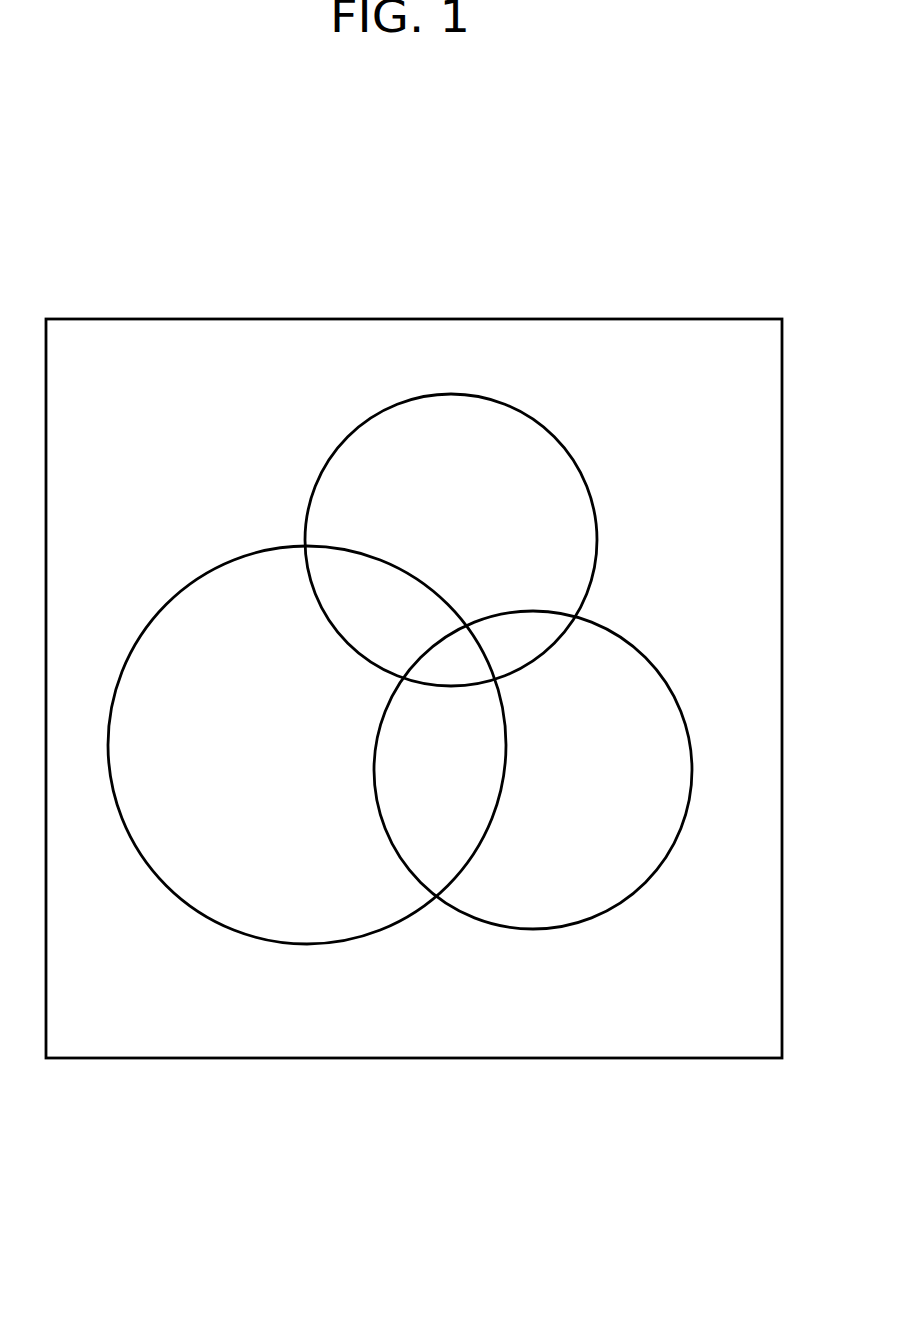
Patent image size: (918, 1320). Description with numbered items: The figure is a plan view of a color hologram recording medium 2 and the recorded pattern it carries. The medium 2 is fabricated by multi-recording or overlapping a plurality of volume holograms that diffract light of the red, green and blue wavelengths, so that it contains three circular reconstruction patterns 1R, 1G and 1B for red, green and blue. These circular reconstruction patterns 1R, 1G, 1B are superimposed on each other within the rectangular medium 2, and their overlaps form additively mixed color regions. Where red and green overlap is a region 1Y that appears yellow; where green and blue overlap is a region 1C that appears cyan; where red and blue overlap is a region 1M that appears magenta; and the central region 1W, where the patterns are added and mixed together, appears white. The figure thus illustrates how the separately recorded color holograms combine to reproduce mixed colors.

The color hologram recording medium 2 is at (458, 1060).
The circular reconstruction pattern of R 1R is at (588, 492).
The circular reconstruction pattern of G 1G is at (165, 600).
The circular reconstruction pattern of B 1B is at (645, 882).
The yellow region 1Y is at (328, 558).
The magenta region 1M is at (556, 630).
The white region 1W is at (478, 668).
The cyan region 1C is at (436, 873).